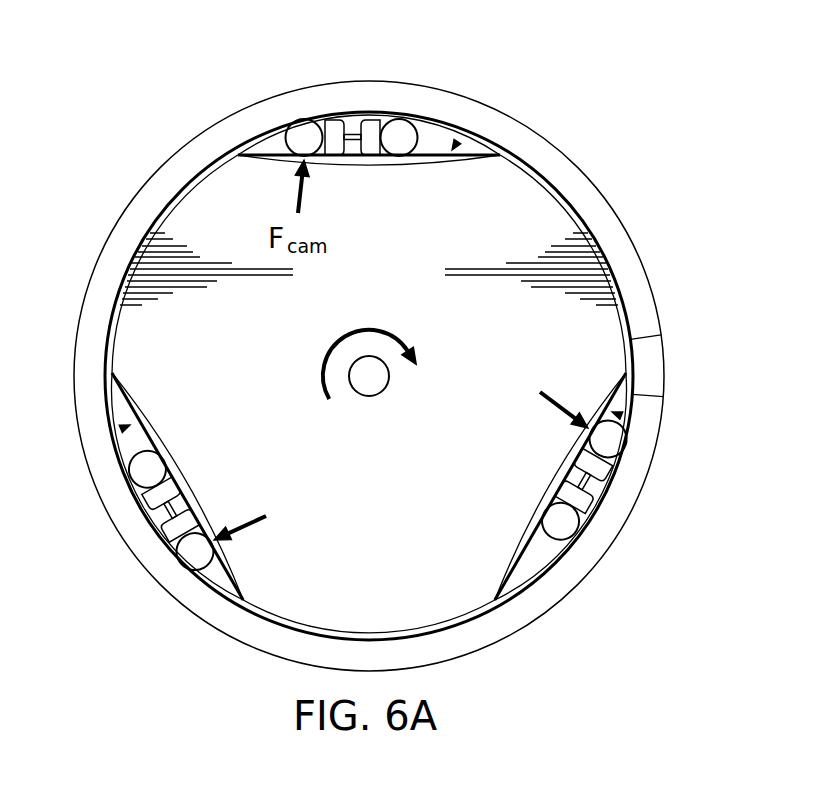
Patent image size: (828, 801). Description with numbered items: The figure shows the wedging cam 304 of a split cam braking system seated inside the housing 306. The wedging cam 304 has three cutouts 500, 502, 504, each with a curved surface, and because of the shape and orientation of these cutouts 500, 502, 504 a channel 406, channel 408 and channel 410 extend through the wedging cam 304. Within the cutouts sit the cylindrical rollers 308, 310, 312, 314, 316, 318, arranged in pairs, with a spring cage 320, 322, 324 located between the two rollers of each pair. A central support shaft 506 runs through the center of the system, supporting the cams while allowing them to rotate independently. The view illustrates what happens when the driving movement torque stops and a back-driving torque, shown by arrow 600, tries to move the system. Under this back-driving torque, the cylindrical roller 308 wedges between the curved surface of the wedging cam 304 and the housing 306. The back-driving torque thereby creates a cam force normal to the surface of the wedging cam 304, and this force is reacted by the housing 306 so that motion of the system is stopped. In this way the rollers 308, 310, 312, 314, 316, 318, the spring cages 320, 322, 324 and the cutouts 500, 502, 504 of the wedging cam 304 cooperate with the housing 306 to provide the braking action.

The wedging cam 304 is at (352, 579).
The housing 306 is at (568, 160).
The cylindrical roller 308 is at (305, 130).
The cylindrical roller 310 is at (400, 130).
The cylindrical roller 312 is at (602, 430).
The cylindrical roller 314 is at (565, 532).
The cylindrical roller 316 is at (186, 555).
The cylindrical roller 318 is at (155, 460).
The spring cage 320 is at (352, 142).
The spring cage 322 is at (575, 472).
The spring cage 324 is at (185, 500).
The channel 406 is at (456, 143).
The channel 408 is at (620, 415).
The channel 410 is at (122, 428).
The cutout 500 is at (252, 152).
The cutout 502 is at (505, 600).
The cutout 504 is at (225, 600).
The central support shaft 506 is at (369, 396).
The arrow 600 is at (350, 333).